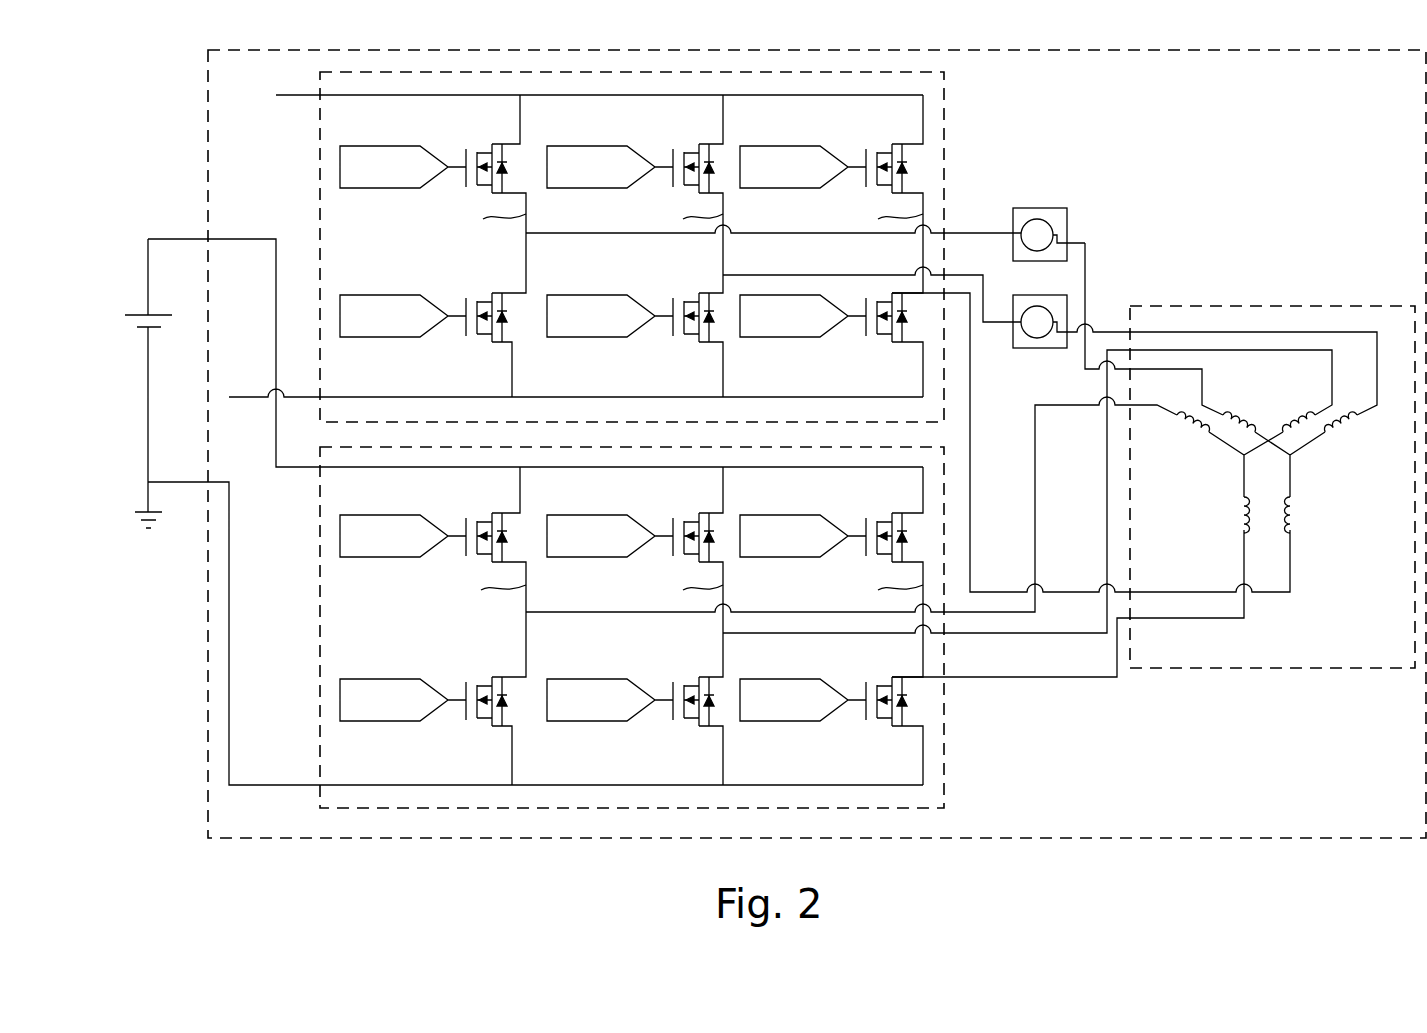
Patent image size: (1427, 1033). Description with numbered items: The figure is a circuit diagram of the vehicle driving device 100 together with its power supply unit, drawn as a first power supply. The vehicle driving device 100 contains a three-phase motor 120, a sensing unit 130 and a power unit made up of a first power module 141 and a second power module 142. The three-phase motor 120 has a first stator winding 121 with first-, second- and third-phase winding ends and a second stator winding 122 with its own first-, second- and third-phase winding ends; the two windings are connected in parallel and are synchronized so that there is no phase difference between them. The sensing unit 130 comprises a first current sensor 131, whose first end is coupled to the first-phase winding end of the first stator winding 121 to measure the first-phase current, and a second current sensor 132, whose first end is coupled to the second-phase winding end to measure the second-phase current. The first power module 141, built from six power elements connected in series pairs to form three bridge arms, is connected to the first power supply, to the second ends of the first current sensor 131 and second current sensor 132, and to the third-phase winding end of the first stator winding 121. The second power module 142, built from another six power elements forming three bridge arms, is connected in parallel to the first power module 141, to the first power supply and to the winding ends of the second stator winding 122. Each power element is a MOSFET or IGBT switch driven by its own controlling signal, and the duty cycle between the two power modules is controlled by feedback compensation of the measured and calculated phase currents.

The vehicle driving device 100 is at (208, 122).
The three-phase motor 120 is at (1318, 306).
The first stator winding 121 is at (1298, 461).
The second stator winding 122 is at (1234, 464).
The sensing unit 130 is at (1194, 172).
The first current sensor 131 is at (1067, 217).
The second current sensor 132 is at (1067, 305).
The first power module 141 is at (948, 100).
The second power module 142 is at (948, 747).